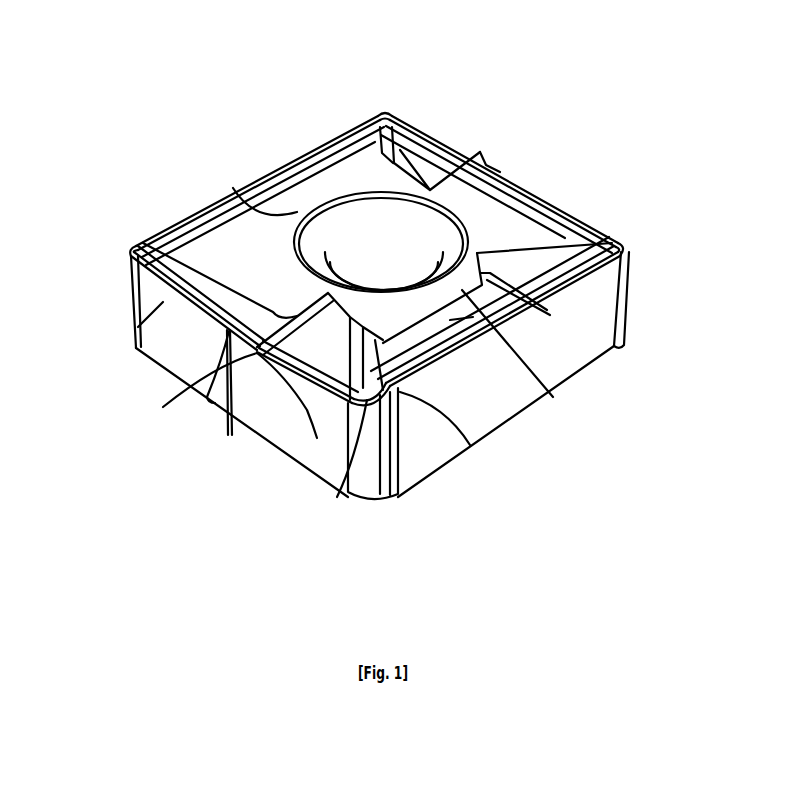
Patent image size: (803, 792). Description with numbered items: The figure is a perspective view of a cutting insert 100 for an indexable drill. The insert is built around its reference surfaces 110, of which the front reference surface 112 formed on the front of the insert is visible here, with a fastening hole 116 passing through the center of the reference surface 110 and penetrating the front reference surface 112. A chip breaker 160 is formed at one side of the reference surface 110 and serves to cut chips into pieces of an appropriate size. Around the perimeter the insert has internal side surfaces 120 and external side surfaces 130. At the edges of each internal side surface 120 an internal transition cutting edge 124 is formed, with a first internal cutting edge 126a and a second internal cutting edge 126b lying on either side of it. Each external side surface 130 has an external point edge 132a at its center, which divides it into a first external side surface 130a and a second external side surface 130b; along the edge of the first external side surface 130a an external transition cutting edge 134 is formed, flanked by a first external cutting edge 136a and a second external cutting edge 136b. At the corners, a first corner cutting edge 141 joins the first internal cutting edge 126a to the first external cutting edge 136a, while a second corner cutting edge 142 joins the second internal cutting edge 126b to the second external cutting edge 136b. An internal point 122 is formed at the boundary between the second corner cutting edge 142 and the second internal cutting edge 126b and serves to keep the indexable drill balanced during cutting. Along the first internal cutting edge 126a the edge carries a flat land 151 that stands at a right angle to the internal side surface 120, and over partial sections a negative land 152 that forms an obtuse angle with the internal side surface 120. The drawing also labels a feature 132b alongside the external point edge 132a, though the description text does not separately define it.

The cutting insert 100 is at (192, 21).
The reference surface 110 is at (312, 223).
The front reference surface 112 is at (350, 223).
The fastening hole 116 is at (352, 173).
The internal side surface 120 is at (527, 363).
The internal point 122 is at (147, 232).
The internal transition cutting edge 124 is at (232, 193).
The first internal cutting edge 126a is at (252, 182).
The second internal cutting edge 126b is at (208, 208).
The external side surface 130 is at (340, 303).
The first external side surface 130a is at (138, 325).
The second external side surface 130b is at (317, 438).
The external point edge 132a is at (232, 412).
The second upper side surface 132b is at (517, 167).
The external transition cutting edge 134 is at (212, 401).
The first external cutting edge 136a is at (447, 142).
The second external cutting edge 136b is at (573, 203).
The first corner cutting edge 141 is at (397, 113).
The second corner cutting edge 142 is at (130, 242).
The flat land 151 is at (262, 176).
The negative land 152 is at (363, 123).
The chip breaker 160 is at (553, 190).